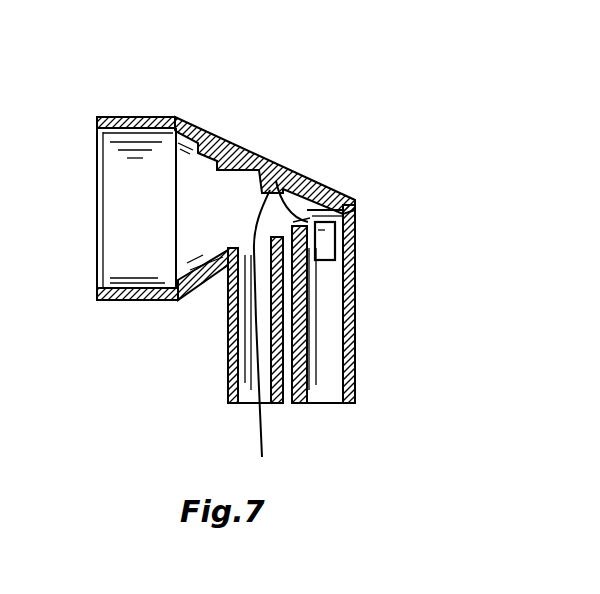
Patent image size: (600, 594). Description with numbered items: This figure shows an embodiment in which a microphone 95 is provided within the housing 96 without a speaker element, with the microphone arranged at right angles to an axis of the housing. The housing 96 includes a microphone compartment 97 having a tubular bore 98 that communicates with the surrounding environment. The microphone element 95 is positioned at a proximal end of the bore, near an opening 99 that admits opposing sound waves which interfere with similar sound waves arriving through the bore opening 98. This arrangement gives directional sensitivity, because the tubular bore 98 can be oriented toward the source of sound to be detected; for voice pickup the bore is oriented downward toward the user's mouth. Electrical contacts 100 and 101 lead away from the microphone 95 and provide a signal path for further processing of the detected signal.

The microphone 95 is at (355, 225).
The housing 96 is at (193, 125).
The microphone compartment 97 is at (355, 330).
The tubular bore 98 is at (330, 385).
The opening 99 is at (320, 228).
The electrical contact 100 is at (305, 198).
The electrical contact 101 is at (257, 218).